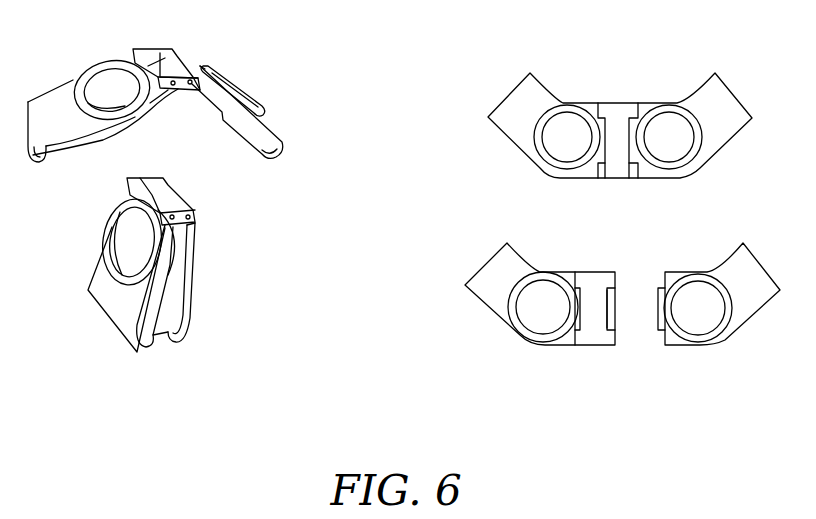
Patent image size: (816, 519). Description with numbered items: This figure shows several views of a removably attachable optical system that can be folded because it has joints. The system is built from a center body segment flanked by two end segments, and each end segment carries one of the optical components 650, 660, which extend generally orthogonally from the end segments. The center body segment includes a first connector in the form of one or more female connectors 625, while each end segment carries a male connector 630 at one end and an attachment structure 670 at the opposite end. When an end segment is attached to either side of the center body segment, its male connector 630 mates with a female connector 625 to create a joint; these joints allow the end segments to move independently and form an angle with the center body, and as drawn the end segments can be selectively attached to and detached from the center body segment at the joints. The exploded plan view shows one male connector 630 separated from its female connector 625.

The female connector 625 is at (617, 313).
The male connector 630 is at (657, 318).
The optical component 650 is at (530, 318).
The optical component 660 is at (708, 320).
The attachment structure 670 is at (178, 343).